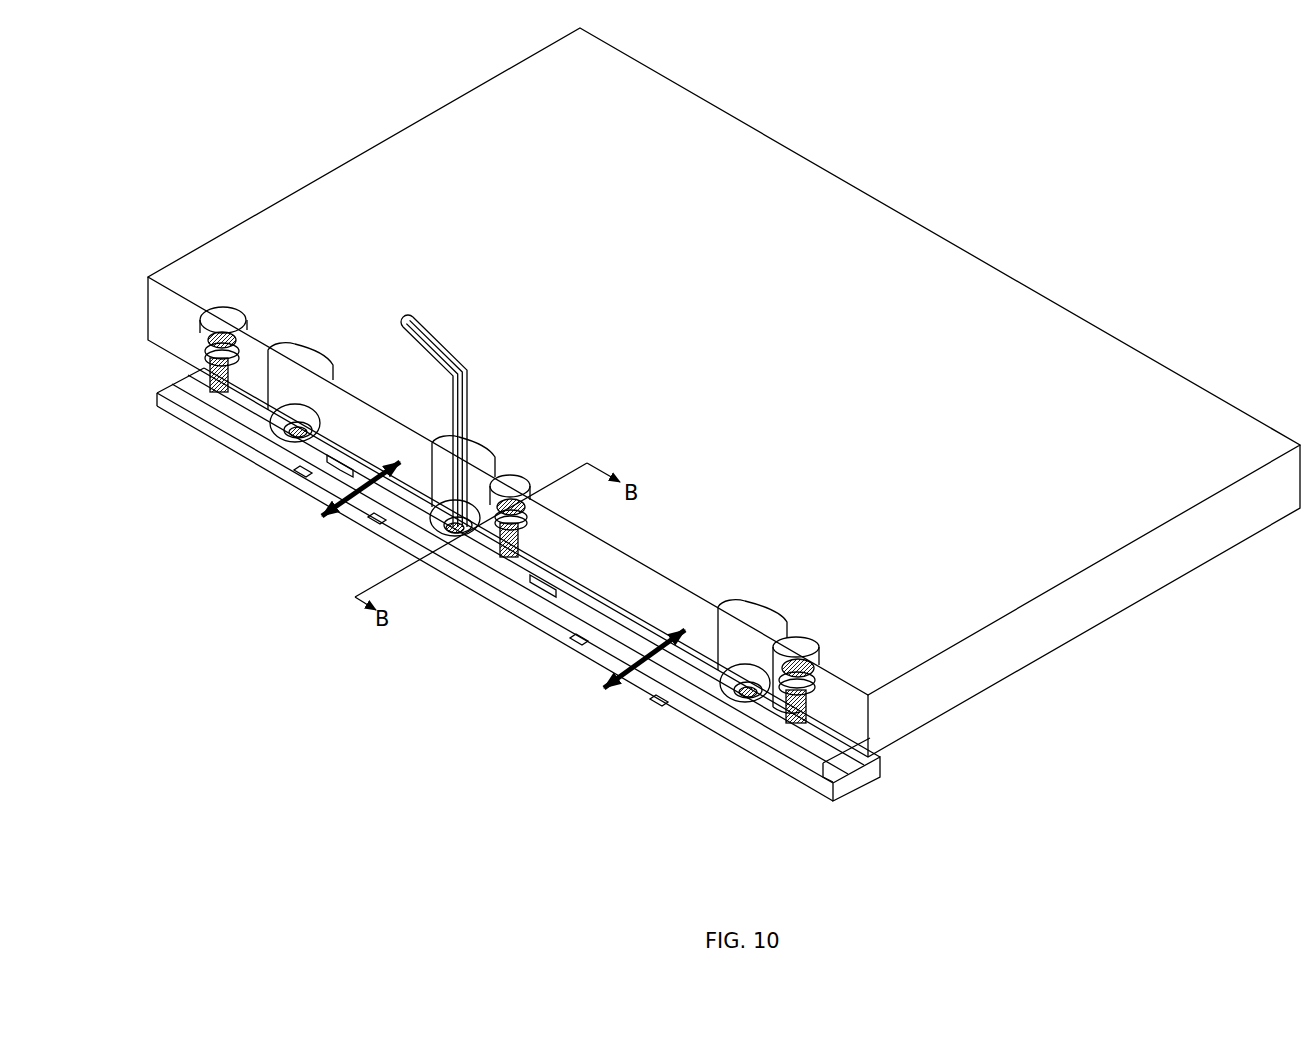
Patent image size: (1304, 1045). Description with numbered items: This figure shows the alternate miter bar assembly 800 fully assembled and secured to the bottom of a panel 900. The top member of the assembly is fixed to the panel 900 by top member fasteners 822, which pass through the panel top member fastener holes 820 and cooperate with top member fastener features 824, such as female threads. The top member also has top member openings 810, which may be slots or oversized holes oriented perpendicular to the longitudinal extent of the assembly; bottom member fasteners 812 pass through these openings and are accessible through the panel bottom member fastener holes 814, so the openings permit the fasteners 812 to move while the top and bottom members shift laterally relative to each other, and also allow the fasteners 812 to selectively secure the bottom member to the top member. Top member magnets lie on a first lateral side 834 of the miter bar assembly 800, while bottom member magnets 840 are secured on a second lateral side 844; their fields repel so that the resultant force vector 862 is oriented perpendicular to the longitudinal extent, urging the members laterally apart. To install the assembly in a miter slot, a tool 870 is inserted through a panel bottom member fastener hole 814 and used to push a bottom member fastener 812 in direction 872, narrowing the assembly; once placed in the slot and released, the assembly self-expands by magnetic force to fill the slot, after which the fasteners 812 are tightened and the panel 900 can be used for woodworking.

The panel 900 is at (572, 194).
The miter bar assembly 800 is at (325, 683).
The top member opening 810 is at (310, 422).
The bottom member fastener 812 is at (287, 440).
The panel bottom member fastener hole 814 is at (300, 343).
The panel top member fastener hole 820 is at (240, 312).
The top member fastener 822 is at (214, 333).
The top member fastener feature 824 is at (215, 392).
The first lateral side 834 is at (887, 762).
The bottom member magnet 840 is at (307, 472).
The second lateral side 844 is at (835, 812).
The resultant force vector 862 is at (363, 487).
The tool 870 is at (428, 328).
The direction 872 is at (463, 413).